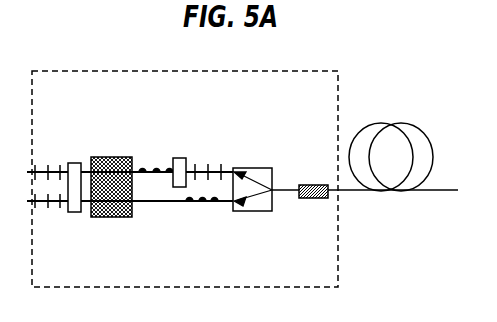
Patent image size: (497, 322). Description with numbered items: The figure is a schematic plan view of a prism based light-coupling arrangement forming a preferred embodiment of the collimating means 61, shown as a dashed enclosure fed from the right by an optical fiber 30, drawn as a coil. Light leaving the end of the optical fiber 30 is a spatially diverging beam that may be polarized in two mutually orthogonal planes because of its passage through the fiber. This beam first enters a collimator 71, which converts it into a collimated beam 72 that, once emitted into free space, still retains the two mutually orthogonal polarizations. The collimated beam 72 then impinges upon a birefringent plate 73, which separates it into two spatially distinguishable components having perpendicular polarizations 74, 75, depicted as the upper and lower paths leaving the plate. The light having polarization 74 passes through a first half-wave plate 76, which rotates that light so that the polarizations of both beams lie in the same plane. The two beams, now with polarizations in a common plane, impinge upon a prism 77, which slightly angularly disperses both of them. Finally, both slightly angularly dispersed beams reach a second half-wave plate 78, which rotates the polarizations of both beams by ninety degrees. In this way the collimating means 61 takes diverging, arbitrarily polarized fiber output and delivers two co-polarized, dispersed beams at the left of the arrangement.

The collimating means 61 is at (496, 72).
The second half-wave plate 78 is at (74, 158).
The prism 77 is at (120, 155).
The first half-wave plate 76 is at (178, 157).
The polarization 74 is at (212, 162).
The polarization 75 is at (197, 210).
The birefringent plate 73 is at (253, 168).
The collimated beam 72 is at (290, 212).
The collimator 71 is at (318, 183).
The optical fiber 30 is at (418, 191).